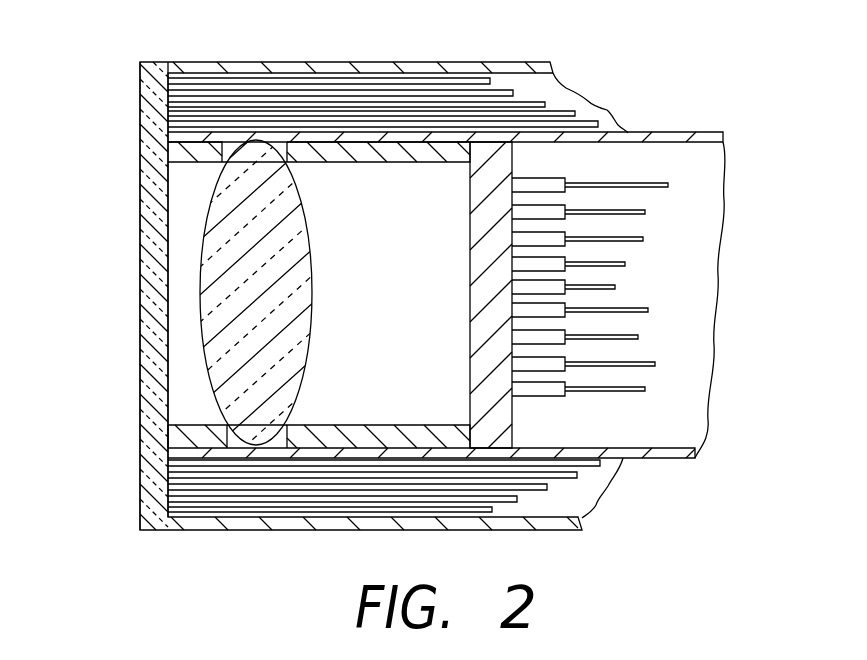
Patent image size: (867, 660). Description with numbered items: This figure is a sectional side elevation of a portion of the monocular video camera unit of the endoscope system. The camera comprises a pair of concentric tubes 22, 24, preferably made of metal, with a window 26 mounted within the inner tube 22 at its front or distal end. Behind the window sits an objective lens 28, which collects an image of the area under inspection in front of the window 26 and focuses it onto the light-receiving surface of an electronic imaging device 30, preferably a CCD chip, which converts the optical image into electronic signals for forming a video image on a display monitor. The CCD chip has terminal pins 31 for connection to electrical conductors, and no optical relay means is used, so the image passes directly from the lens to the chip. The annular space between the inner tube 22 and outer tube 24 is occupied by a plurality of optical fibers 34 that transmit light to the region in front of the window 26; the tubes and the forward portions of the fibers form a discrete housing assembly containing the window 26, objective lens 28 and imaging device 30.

The inner tube 22 is at (674, 133).
The outer tube 24 is at (316, 62).
The window 26 is at (140, 370).
The objective lens 28 is at (310, 228).
The electronic imaging device 30 is at (480, 292).
The terminal pins 31 is at (543, 183).
The optical fibers 34 is at (515, 90).